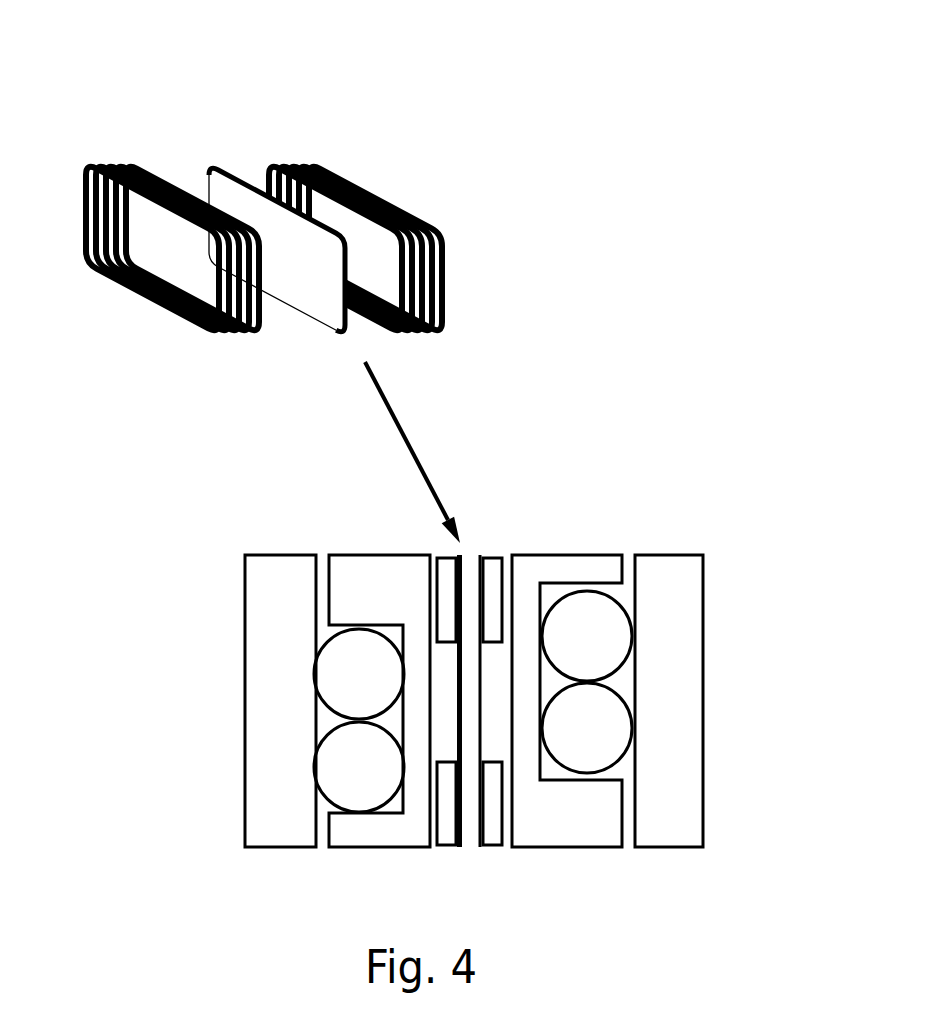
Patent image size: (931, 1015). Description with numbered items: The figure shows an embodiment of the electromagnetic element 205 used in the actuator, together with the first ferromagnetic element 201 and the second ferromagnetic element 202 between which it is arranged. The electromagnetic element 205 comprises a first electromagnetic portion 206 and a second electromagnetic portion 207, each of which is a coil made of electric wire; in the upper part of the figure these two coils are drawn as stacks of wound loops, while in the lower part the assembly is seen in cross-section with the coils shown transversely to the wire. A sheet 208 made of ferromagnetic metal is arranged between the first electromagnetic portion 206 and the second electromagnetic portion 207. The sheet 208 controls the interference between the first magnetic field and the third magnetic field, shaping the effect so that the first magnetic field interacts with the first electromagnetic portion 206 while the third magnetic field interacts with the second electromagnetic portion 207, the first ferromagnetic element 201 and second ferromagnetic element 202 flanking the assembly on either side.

The first ferromagnetic element 201 is at (285, 755).
The second ferromagnetic element 202 is at (710, 701).
The electromagnetic element 205 is at (463, 556).
The first electromagnetic portion 206 is at (193, 333).
The second electromagnetic portion 207 is at (447, 330).
The sheet 208 is at (212, 160).